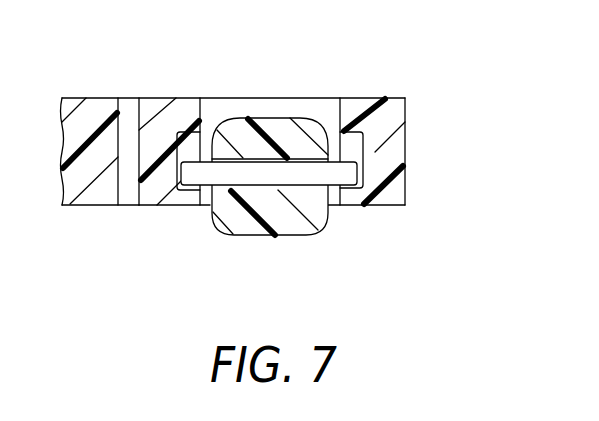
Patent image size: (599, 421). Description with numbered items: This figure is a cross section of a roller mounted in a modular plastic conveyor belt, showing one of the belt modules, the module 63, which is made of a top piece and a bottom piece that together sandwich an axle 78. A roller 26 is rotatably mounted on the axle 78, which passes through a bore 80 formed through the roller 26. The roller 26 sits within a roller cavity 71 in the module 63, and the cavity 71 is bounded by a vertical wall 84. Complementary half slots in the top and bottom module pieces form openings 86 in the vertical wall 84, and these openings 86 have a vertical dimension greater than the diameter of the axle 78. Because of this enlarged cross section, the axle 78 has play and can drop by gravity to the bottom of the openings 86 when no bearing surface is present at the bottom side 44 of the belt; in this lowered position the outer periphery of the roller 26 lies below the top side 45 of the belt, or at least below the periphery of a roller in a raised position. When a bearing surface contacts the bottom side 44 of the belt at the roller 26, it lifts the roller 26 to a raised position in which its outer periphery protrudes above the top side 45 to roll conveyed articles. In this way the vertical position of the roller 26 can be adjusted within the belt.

The roller 26 is at (318, 225).
The bottom side 44 is at (387, 205).
The top side 45 is at (370, 97).
The module 63 is at (405, 123).
The roller cavity 71 is at (219, 107).
The axle 78 is at (192, 180).
The bore 80 is at (208, 190).
The vertical wall 84 is at (272, 100).
The openings 86 is at (186, 148).